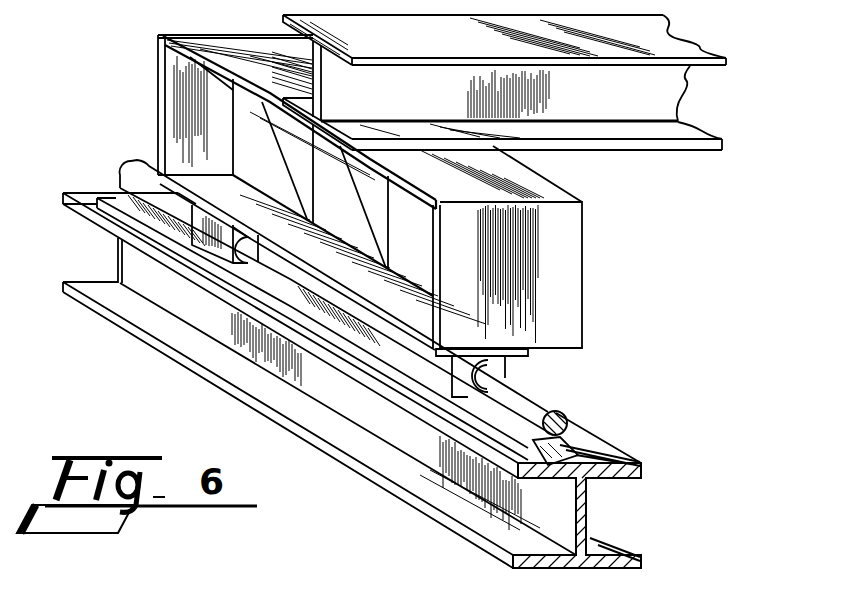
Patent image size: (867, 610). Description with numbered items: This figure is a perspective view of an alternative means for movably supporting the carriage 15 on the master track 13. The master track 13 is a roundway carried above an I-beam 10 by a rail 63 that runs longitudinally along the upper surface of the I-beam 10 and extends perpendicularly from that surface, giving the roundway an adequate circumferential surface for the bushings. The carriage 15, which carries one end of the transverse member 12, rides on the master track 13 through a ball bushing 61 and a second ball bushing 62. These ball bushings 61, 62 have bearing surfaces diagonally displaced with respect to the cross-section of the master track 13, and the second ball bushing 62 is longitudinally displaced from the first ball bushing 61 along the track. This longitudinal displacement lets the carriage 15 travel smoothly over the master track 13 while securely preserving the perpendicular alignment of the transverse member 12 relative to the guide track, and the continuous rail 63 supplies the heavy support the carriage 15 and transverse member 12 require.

The I-beam 10 is at (430, 510).
The transverse member 12 is at (647, 110).
The master track 13 is at (525, 403).
The carriage 15 is at (558, 280).
The ball bushing 61 is at (508, 368).
The second ball bushing 62 is at (226, 244).
The rail 63 is at (566, 445).